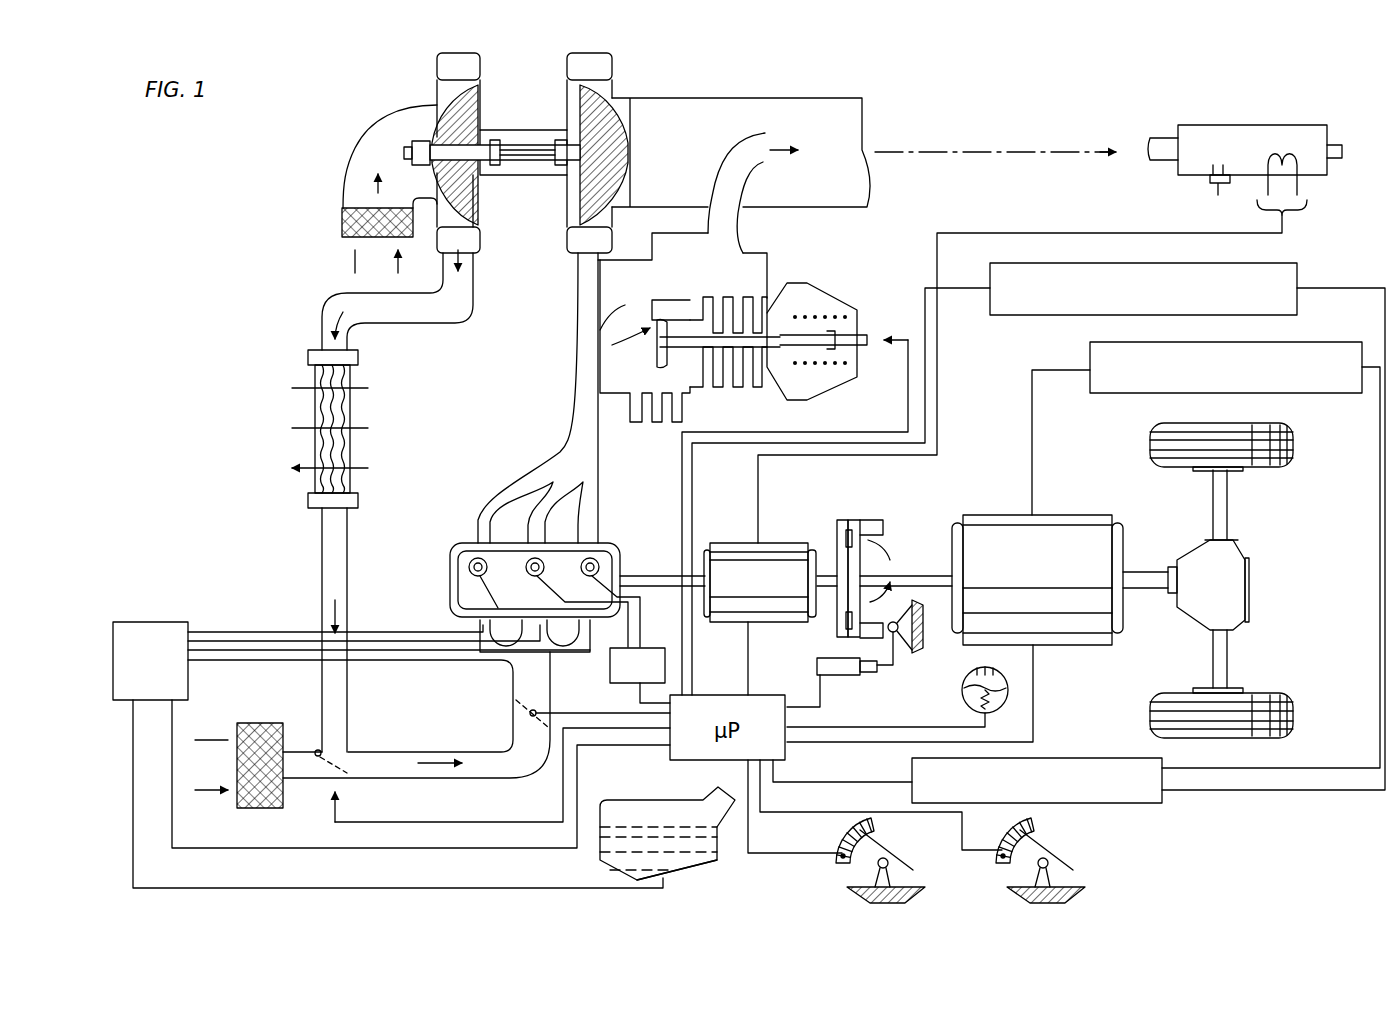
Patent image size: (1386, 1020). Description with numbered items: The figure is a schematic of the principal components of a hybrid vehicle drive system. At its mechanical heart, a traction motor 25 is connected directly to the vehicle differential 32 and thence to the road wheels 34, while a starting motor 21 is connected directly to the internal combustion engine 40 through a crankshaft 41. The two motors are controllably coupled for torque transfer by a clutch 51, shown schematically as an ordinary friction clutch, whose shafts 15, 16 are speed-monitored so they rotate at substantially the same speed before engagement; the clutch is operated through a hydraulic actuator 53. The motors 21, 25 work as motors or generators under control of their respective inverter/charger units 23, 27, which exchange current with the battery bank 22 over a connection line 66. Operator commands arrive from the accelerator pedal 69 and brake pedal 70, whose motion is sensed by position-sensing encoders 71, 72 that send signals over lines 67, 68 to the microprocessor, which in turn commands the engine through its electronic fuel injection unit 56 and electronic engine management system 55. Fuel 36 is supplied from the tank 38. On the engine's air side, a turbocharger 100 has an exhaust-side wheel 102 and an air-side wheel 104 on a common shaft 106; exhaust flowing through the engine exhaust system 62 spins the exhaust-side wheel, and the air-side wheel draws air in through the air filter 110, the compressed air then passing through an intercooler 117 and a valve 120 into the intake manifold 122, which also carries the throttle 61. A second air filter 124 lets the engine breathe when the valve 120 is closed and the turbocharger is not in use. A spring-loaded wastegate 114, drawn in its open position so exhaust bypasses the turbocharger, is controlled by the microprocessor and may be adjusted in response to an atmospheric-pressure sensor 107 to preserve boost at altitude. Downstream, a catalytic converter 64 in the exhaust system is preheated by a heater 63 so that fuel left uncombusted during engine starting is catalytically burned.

The turbocharger 100 is at (532, 118).
The exhaust-side wheel 102 is at (605, 122).
The air-side wheel 104 is at (447, 118).
The common shaft 106 is at (531, 163).
The air filter 110 is at (342, 222).
The intercooler 117 is at (308, 358).
The wastegate 114 is at (815, 271).
The engine exhaust system 62 is at (577, 406).
The internal combustion engine 40 is at (457, 547).
The crankshaft 41 is at (635, 573).
The starting motor 21 is at (733, 543).
The shaft 15 is at (828, 572).
The clutch 51 is at (862, 514).
The shaft 16 is at (915, 577).
The hydraulic actuator 53 is at (842, 677).
The atmospheric-pressure sensor 107 is at (960, 697).
The traction motor 25 is at (1073, 583).
The vehicle differential 32 is at (1228, 595).
The road wheels 34 is at (1293, 440).
The catalytic converter 64 is at (1243, 125).
The heater 63 is at (1285, 150).
The inverter/charger 23 is at (1290, 263).
The inverter/charger 27 is at (1327, 342).
The battery bank 22 is at (1148, 805).
The battery connection line 66 is at (838, 782).
The line 67 is at (860, 812).
The line 68 is at (748, 776).
The brake pedal 70 is at (912, 862).
The position-sensing encoder 71 is at (840, 835).
The accelerator pedal 69 is at (1077, 857).
The position-sensing encoder 72 is at (1013, 828).
The electronic engine management system 55 is at (667, 657).
The electronic fuel injection unit 56 is at (160, 622).
The second air filter 124 is at (273, 723).
The intake manifold 122 is at (512, 688).
The throttle 61 is at (513, 725).
The valve 120 is at (323, 777).
The tank 38 is at (640, 800).
The fuel 36 is at (682, 862).